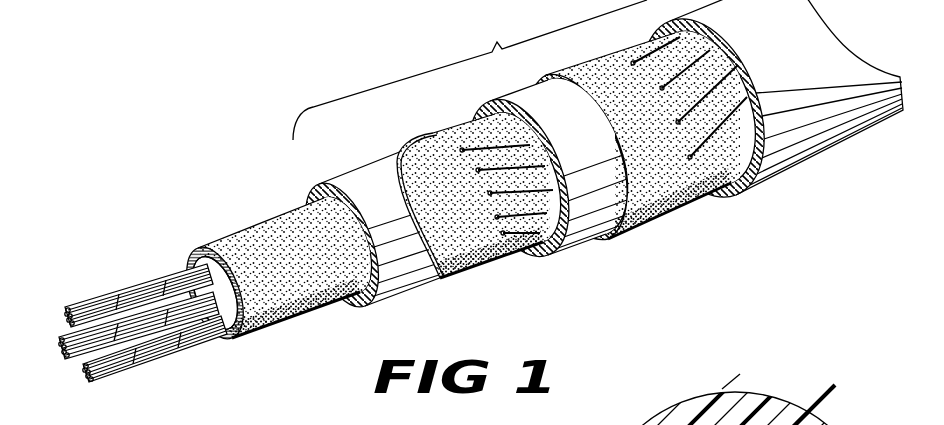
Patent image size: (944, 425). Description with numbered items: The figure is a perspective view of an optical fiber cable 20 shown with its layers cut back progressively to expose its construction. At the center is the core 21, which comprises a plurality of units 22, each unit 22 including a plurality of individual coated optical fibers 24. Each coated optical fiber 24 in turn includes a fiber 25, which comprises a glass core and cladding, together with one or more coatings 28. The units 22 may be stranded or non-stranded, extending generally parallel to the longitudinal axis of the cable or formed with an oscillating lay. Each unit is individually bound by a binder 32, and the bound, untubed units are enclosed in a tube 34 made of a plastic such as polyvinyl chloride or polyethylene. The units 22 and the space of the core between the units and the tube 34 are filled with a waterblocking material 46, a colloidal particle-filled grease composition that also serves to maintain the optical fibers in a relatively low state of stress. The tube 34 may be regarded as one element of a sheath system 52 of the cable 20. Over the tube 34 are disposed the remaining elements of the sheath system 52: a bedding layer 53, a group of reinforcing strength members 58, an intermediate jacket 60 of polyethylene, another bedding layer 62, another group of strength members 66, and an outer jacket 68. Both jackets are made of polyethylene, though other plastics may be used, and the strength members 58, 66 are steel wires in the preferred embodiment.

The cable 20 is at (317, 88).
The core 21 is at (195, 379).
The unit 22 is at (148, 354).
The coated optical fiber 24 is at (91, 381).
The fiber 25 is at (650, 424).
The coating 28 is at (810, 414).
The binder 32 is at (92, 302).
The tube 34 is at (352, 305).
The waterblocking material 46 is at (232, 238).
The sheath system 52 is at (470, 70).
The bedding layer 53 is at (400, 151).
The reinforcing strength member 58 is at (541, 158).
The intermediate jacket 60 is at (530, 251).
The bedding layer 62 is at (603, 236).
The strength member 66 is at (617, 54).
The outer jacket 68 is at (730, 188).